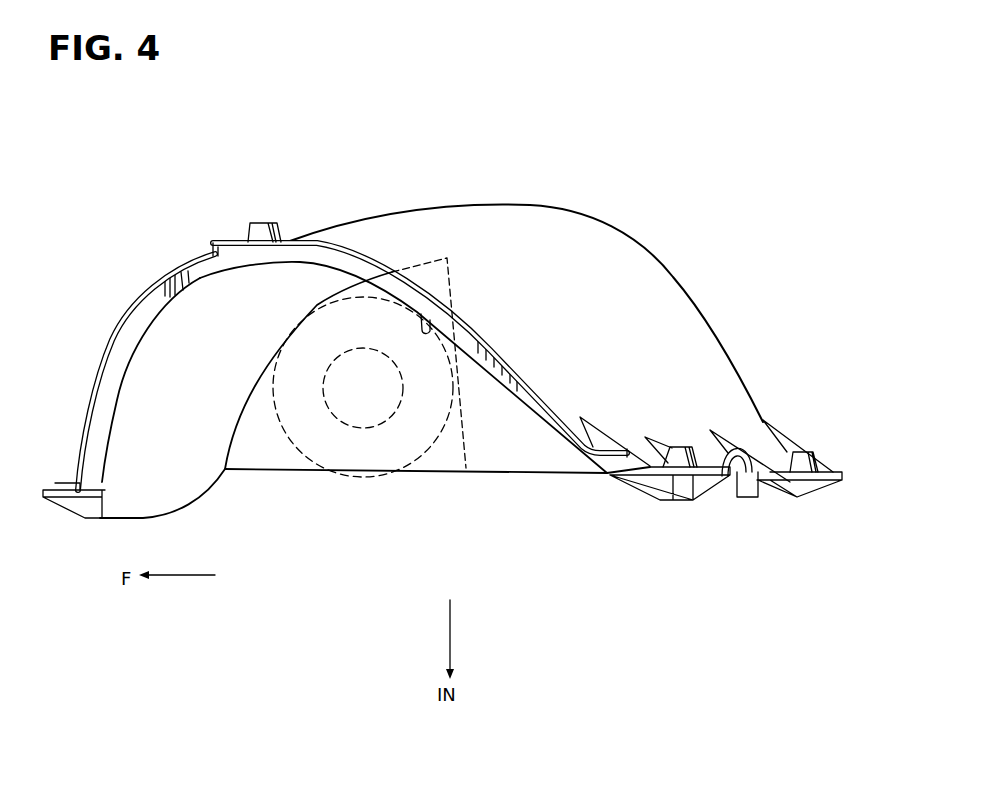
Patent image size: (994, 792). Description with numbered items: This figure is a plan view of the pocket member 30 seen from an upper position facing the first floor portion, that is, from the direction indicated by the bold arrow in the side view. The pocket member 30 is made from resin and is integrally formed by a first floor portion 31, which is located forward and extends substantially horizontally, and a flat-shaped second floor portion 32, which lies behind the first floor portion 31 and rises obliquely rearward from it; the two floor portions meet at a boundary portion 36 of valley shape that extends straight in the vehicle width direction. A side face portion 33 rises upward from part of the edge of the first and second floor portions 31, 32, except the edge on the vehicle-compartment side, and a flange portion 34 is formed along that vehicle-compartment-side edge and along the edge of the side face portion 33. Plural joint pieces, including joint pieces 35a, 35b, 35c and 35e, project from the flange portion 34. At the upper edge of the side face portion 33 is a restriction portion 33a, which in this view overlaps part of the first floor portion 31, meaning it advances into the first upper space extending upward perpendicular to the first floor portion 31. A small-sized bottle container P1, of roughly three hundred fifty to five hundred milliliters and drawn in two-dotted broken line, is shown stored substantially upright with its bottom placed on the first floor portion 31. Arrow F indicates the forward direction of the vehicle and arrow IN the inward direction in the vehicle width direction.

The pocket member 30 is at (620, 217).
The first floor portion 31 is at (263, 452).
The second floor portion 32 is at (518, 455).
The side face portion 33 is at (163, 371).
The restriction portion 33a is at (430, 331).
The flange portion 34 is at (539, 400).
The joint piece 35a is at (236, 242).
The joint piece 35b is at (50, 497).
The joint piece 35c is at (672, 500).
The joint piece 35e is at (828, 484).
The boundary portion 36 is at (460, 452).
The small-sized bottle container P1 is at (290, 450).